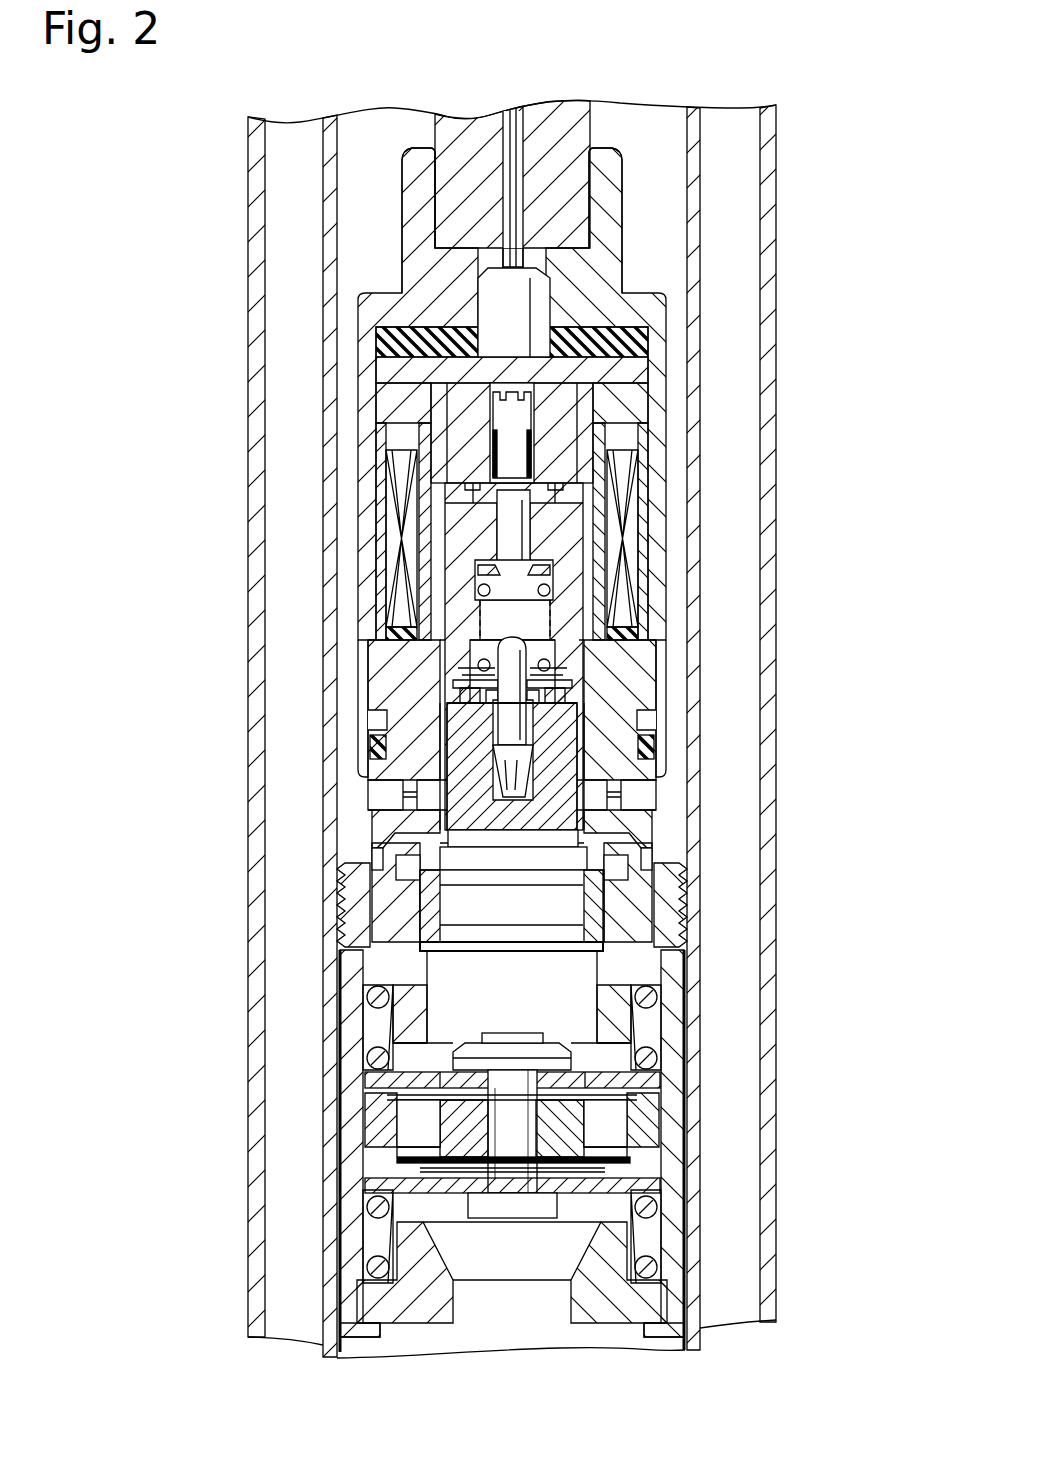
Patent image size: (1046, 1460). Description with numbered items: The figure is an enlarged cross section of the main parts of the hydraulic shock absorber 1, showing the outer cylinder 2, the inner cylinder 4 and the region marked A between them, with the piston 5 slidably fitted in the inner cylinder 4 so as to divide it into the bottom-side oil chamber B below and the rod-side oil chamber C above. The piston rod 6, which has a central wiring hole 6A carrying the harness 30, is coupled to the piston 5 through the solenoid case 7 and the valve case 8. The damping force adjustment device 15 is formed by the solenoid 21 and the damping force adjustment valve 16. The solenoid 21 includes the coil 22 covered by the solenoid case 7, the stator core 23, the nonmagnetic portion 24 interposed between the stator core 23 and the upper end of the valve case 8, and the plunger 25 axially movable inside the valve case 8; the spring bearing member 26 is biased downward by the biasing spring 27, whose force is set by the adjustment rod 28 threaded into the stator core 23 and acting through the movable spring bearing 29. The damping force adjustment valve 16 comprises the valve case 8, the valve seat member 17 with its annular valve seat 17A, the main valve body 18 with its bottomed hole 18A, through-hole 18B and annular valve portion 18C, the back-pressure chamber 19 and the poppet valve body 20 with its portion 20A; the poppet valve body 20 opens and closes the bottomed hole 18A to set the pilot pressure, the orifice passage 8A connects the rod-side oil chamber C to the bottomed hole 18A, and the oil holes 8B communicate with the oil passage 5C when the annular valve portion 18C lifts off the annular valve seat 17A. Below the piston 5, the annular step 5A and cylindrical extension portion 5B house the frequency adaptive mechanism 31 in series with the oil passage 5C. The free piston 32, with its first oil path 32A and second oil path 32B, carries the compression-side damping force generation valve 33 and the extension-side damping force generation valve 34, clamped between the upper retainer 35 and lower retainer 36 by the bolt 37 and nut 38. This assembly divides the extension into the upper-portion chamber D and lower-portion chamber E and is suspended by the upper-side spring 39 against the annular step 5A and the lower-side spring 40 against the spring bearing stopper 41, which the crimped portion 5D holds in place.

The hydraulic shock absorber 1 is at (235, 160).
The outer cylinder 2 is at (765, 165).
The inner cylinder 4 is at (700, 445).
The piston 5 is at (672, 932).
The annular step 5A is at (632, 975).
The cylindrical extension portion 5B is at (658, 1068).
The oil passage 5C is at (512, 948).
The crimped portion 5D is at (365, 1338).
The piston rod 6 is at (565, 120).
The wiring hole 6A is at (490, 165).
The solenoid case 7 is at (365, 345).
The valve case 8 is at (633, 668).
The orifice passage 8A is at (408, 785).
The oil holes 8B is at (605, 868).
The damping force adjustment device 15 is at (648, 285).
The damping force adjustment valve 16 is at (660, 805).
The valve seat member 17 is at (432, 913).
The annular valve seat 17A is at (620, 899).
The main valve body 18 is at (420, 826).
The bottomed hole 18A is at (470, 733).
The through-hole 18B is at (565, 800).
The annular valve portion 18C is at (413, 860).
The back-pressure chamber 19 is at (432, 805).
The poppet valve body 20 is at (528, 750).
The valve element flange 20A is at (570, 708).
The solenoid 21 is at (356, 378).
The coil 22 is at (630, 530).
The stator core 23 is at (458, 440).
The nonmagnetic portion 24 is at (615, 530).
The plunger 25 is at (467, 535).
The spring bearing member 26 is at (480, 665).
The biasing spring 27 is at (475, 597).
The adjustment rod 28 is at (530, 430).
The movable spring bearing 29 is at (545, 575).
The harness 30 is at (520, 190).
The frequency adaptive mechanism 31 is at (341, 1133).
The free piston 32 is at (605, 1122).
The first oil path 32A is at (608, 1130).
The second oil path 32B is at (405, 1123).
The compression-side damping force generation valve 33 is at (637, 1093).
The extension-side damping force generation valve 34 is at (413, 1152).
The upper retainer 35 is at (420, 1063).
The lower retainer 36 is at (512, 1203).
The bolt 37 is at (495, 1203).
The nut 38 is at (493, 1032).
The upper-side spring 39 is at (668, 1004).
The lower-side spring 40 is at (525, 1238).
The spring bearing stopper 41 is at (468, 1297).
The reservoir chamber A is at (735, 288).
The bottom-side oil chamber B is at (527, 1340).
The rod-side oil chamber C is at (375, 262).
The upper-portion chamber D is at (503, 1002).
The lower-portion chamber E is at (555, 1258).